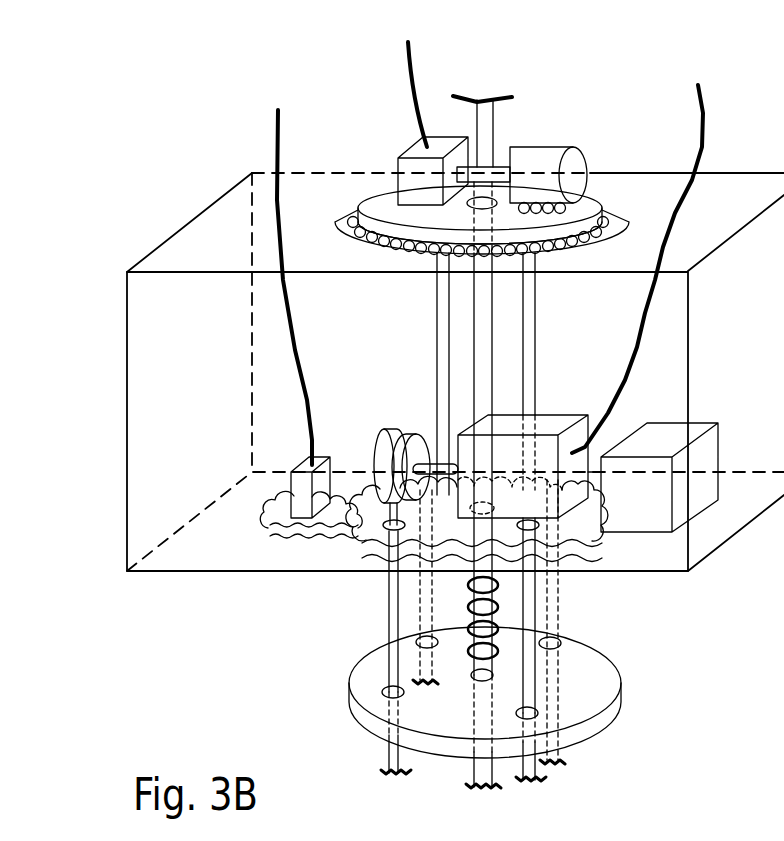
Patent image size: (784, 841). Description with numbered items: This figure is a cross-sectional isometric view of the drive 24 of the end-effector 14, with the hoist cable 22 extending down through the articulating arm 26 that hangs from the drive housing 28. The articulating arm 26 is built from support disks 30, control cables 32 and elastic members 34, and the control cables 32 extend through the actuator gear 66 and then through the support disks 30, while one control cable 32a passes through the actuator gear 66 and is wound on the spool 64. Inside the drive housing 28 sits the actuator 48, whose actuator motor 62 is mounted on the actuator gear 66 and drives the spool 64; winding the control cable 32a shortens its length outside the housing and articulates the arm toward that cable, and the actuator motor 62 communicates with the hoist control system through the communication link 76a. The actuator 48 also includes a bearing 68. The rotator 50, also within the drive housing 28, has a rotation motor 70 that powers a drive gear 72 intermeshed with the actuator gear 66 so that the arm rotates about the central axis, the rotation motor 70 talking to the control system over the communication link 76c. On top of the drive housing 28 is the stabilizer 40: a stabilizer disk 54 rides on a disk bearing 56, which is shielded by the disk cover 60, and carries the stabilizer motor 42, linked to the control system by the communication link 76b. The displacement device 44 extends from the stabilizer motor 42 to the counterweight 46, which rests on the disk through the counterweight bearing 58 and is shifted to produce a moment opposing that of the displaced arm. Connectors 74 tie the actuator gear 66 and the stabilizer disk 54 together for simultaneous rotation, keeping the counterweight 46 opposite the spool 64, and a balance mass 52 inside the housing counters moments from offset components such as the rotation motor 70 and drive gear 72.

The end-effector 14 is at (112, 345).
The hoist cable 22 is at (478, 311).
The drive 24 is at (154, 244).
The articulating arm 26 is at (447, 630).
The drive housing 28 is at (212, 200).
The support disks 30 is at (620, 693).
The control cables 32 is at (428, 583).
The control cable 32a is at (392, 601).
The elastic members 34 is at (487, 648).
The stabilizer 40 is at (505, 146).
The stabilizer motor 42 is at (419, 148).
The displacement device 44 is at (496, 173).
The counterweight 46 is at (568, 165).
The actuator 48 is at (532, 424).
The rotator 50 is at (267, 449).
The balance mass 52 is at (694, 428).
The stabilizer disk 54 is at (572, 214).
The disk bearing 56 is at (355, 212).
The counterweight bearing 58 is at (598, 206).
The disk cover 60 is at (348, 221).
The actuator motor 62 is at (541, 428).
The spool 64 is at (378, 433).
The actuator gear 66 is at (578, 518).
The bearing 68 is at (380, 535).
The rotation motor 70 is at (299, 470).
The drive gear 72 is at (266, 520).
The connectors 74 is at (437, 302).
The communication link 76a is at (706, 111).
The communication link 76b is at (409, 52).
The communication link 76c is at (274, 137).